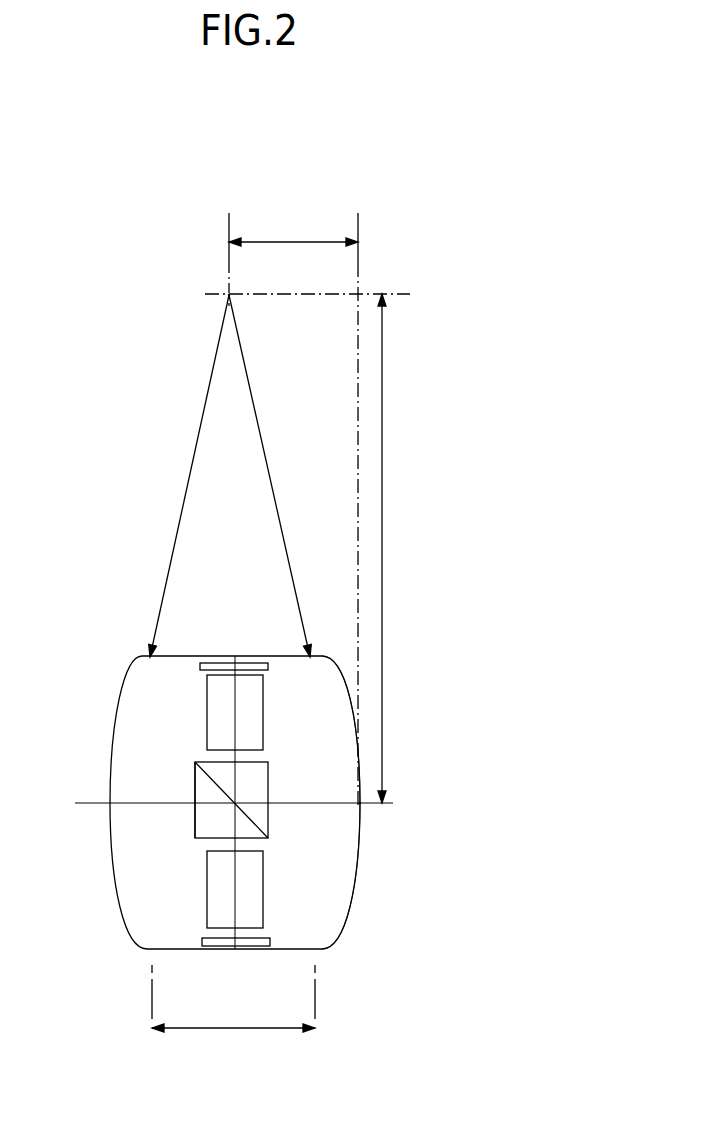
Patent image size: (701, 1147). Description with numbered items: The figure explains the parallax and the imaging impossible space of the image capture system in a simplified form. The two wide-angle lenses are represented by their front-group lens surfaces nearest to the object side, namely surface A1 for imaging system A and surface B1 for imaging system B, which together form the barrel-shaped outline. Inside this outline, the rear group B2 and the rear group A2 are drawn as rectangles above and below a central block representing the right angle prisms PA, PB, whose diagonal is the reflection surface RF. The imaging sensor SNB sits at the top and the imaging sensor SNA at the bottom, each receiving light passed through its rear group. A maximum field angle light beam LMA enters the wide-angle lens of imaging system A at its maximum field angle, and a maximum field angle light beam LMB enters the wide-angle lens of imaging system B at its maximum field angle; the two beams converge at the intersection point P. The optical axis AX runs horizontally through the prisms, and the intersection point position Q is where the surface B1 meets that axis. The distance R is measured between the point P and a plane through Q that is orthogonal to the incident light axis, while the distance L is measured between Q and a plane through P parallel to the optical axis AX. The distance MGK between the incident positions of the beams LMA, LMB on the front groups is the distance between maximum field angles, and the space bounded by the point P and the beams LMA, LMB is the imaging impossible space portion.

The distance R is at (285, 241).
The intersection point P is at (227, 297).
The maximum field angle light beam LMA is at (188, 478).
The maximum field angle light beam LMB is at (270, 470).
The distance L is at (384, 557).
The imaging sensor SNB is at (245, 661).
The rear group B2 is at (265, 727).
The right angle prism PB is at (252, 790).
The right angle prism PA is at (207, 822).
The reflection surface RF is at (263, 829).
The intersection point position Q is at (361, 806).
The optical axis AX is at (82, 806).
The object side lens surface A1 is at (118, 898).
The rear group A2 is at (212, 888).
The object side lens surface B1 is at (348, 903).
The imaging sensor SNA is at (258, 948).
The distance between maximum field angles MGK is at (238, 1030).